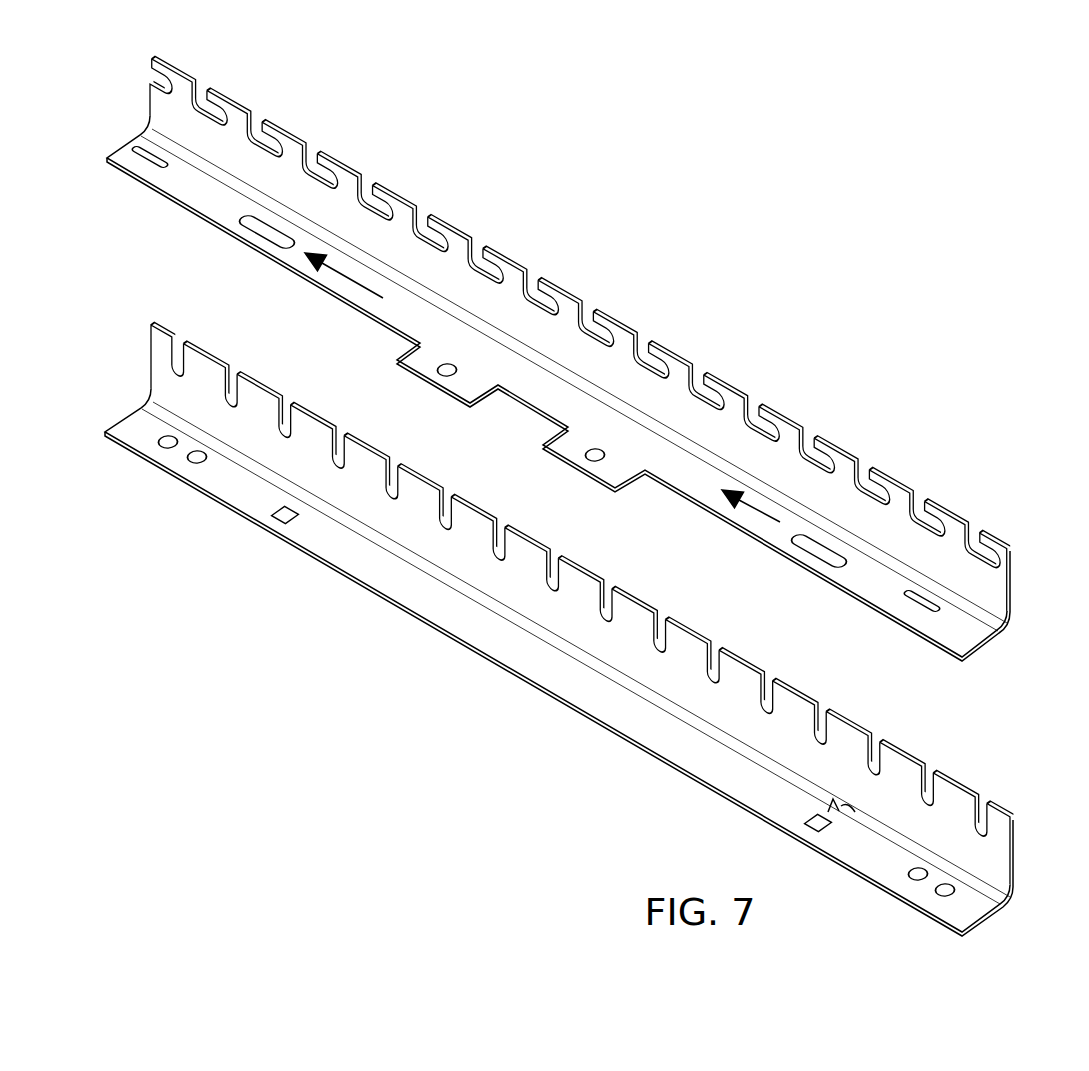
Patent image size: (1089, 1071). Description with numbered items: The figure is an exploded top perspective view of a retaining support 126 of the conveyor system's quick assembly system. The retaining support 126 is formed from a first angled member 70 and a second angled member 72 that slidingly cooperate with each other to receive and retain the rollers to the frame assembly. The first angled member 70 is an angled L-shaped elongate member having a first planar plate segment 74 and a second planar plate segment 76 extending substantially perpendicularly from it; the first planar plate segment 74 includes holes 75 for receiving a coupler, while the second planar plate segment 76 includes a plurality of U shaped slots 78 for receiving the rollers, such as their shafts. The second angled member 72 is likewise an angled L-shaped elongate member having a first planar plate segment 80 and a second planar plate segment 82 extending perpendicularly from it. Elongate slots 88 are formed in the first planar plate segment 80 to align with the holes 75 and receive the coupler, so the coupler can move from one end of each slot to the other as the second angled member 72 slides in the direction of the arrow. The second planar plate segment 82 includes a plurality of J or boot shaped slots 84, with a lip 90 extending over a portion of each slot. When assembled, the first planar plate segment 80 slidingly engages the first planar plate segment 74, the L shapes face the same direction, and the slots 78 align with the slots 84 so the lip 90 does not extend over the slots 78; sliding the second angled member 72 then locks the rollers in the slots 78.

The retaining support 126 is at (848, 233).
The first angled member 70 is at (586, 649).
The second angled member 72 is at (586, 358).
The first planar plate segment 74 is at (730, 767).
The holes 75 is at (210, 453).
The second planar plate segment 76 is at (793, 736).
The U shaped slots 78 is at (652, 640).
The first planar plate segment 80 is at (657, 463).
The second planar plate segment 82 is at (841, 478).
The J or boot shaped slots 84 is at (470, 278).
The slots 88 is at (905, 592).
The lip 90 is at (719, 377).